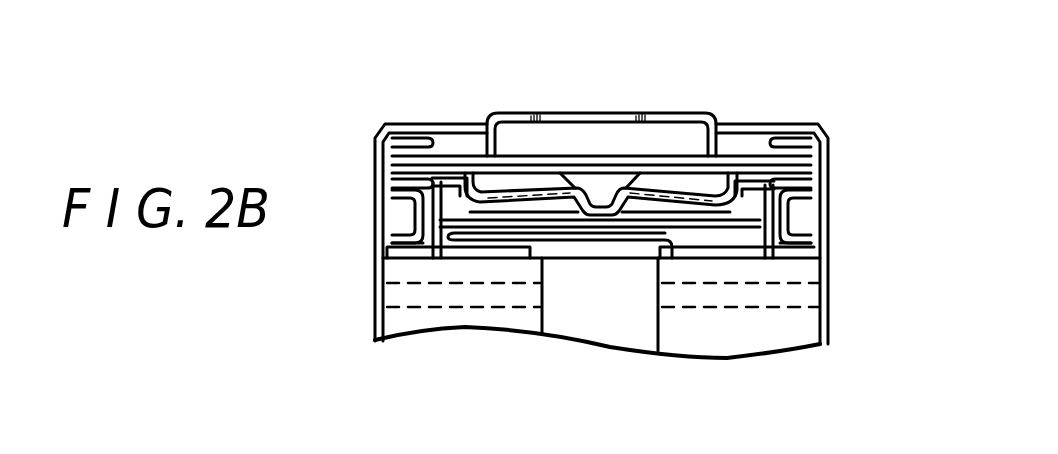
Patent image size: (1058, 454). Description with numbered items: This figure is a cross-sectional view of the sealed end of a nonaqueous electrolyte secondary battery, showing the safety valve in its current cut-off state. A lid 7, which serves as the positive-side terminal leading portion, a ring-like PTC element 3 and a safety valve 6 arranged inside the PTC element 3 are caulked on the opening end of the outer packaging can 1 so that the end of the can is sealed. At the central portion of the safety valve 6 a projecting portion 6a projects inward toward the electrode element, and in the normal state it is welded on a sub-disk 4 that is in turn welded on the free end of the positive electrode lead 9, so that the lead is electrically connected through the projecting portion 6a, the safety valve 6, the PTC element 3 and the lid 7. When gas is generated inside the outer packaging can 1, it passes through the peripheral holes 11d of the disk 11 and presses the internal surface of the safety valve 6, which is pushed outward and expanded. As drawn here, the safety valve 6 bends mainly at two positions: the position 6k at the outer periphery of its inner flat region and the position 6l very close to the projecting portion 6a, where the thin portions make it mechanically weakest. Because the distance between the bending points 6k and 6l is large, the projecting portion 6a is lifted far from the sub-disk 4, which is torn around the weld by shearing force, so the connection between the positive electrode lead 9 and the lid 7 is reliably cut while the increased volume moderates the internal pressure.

The outer packaging can 1 is at (832, 292).
The PTC element 3 is at (762, 130).
The sub-disk 4 is at (615, 242).
The safety valve 6 is at (692, 194).
The projecting portion 6a is at (602, 186).
The bending point at outer periphery of inner flat region 6k is at (445, 212).
The bending point near projecting portion 6l is at (585, 198).
The lid 7 is at (585, 112).
The positive electrode lead 9 is at (688, 248).
The disk 11 is at (805, 298).
The peripheral holes 11d is at (480, 232).